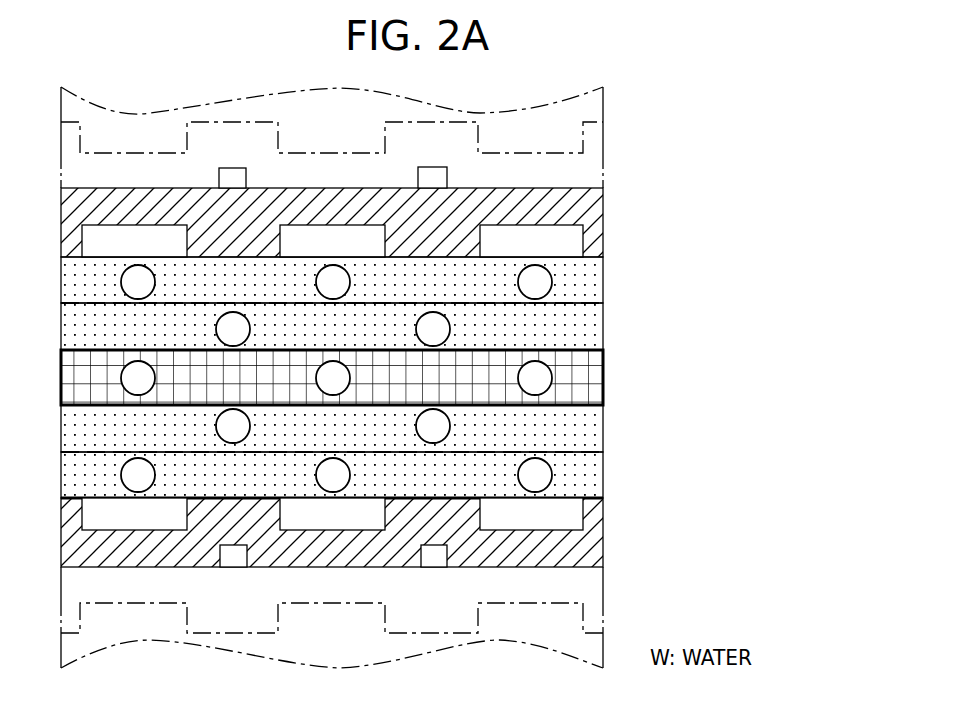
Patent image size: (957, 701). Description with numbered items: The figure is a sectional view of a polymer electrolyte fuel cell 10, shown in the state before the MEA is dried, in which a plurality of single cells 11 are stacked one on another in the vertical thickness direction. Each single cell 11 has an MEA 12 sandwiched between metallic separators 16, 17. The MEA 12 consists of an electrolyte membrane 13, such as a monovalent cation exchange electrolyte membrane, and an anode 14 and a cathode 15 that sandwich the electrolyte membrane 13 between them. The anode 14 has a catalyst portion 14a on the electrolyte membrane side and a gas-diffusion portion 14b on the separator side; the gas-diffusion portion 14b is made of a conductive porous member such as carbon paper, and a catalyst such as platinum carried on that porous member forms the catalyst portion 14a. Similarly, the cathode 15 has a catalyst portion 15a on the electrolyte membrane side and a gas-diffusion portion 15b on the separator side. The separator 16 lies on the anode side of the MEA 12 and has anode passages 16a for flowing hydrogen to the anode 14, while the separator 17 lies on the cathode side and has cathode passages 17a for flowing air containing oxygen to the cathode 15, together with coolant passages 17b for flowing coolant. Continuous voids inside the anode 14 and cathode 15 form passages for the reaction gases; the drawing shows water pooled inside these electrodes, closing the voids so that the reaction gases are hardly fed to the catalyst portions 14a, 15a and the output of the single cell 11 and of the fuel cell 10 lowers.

The fuel cell 10 is at (678, 96).
The single cell 11 is at (824, 563).
The MEA 12 is at (432, 374).
The electrolyte membrane 13 is at (600, 378).
The anode 14 is at (402, 300).
The catalyst portion 14a is at (605, 318).
The gas-diffusion portion 14b is at (605, 268).
The cathode 15 is at (402, 446).
The catalyst portion 15a is at (605, 415).
The gas-diffusion portion 15b is at (605, 462).
The separator 16 is at (432, 212).
The anode passages 16a is at (154, 254).
The separator 17 is at (432, 565).
The cathode passages 17a is at (154, 527).
The coolant passages 17b is at (233, 562).